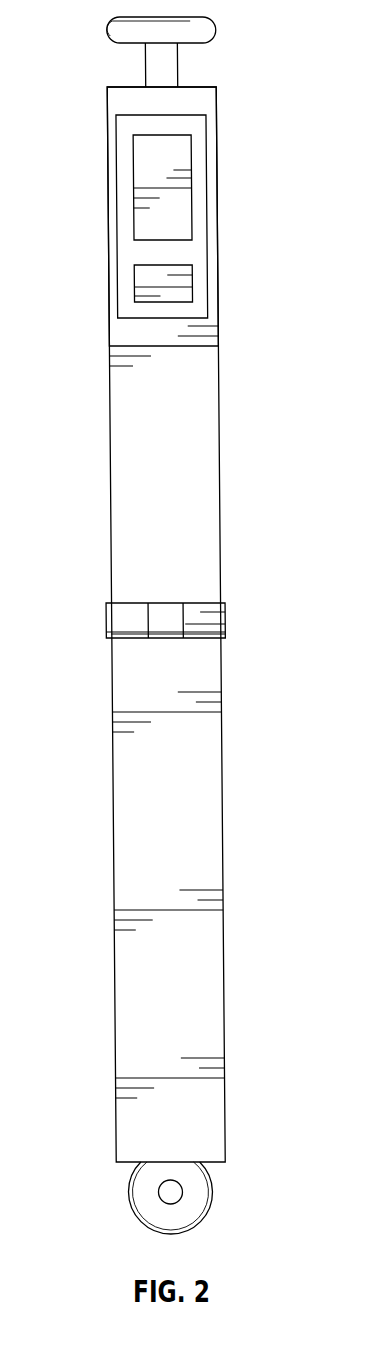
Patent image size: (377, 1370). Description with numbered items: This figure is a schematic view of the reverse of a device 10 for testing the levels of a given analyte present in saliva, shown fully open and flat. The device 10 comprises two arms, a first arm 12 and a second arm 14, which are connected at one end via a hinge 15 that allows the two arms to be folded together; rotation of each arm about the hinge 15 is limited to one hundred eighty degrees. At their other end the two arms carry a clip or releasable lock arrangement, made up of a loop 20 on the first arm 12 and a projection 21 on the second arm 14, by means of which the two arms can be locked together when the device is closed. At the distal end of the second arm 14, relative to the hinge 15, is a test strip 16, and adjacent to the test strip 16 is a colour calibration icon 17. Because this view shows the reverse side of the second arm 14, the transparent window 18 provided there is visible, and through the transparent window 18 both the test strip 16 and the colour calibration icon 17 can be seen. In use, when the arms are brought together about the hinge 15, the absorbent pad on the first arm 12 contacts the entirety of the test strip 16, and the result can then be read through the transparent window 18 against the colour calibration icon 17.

The device 10 is at (308, 459).
The first arm 12 is at (204, 842).
The second arm 14 is at (204, 418).
The hinge 15 is at (226, 620).
The test strip 16 is at (140, 171).
The colour calibration icon 17 is at (138, 297).
The transparent window 18 is at (206, 147).
The loop 20 is at (214, 1190).
The projection 21 is at (112, 30).